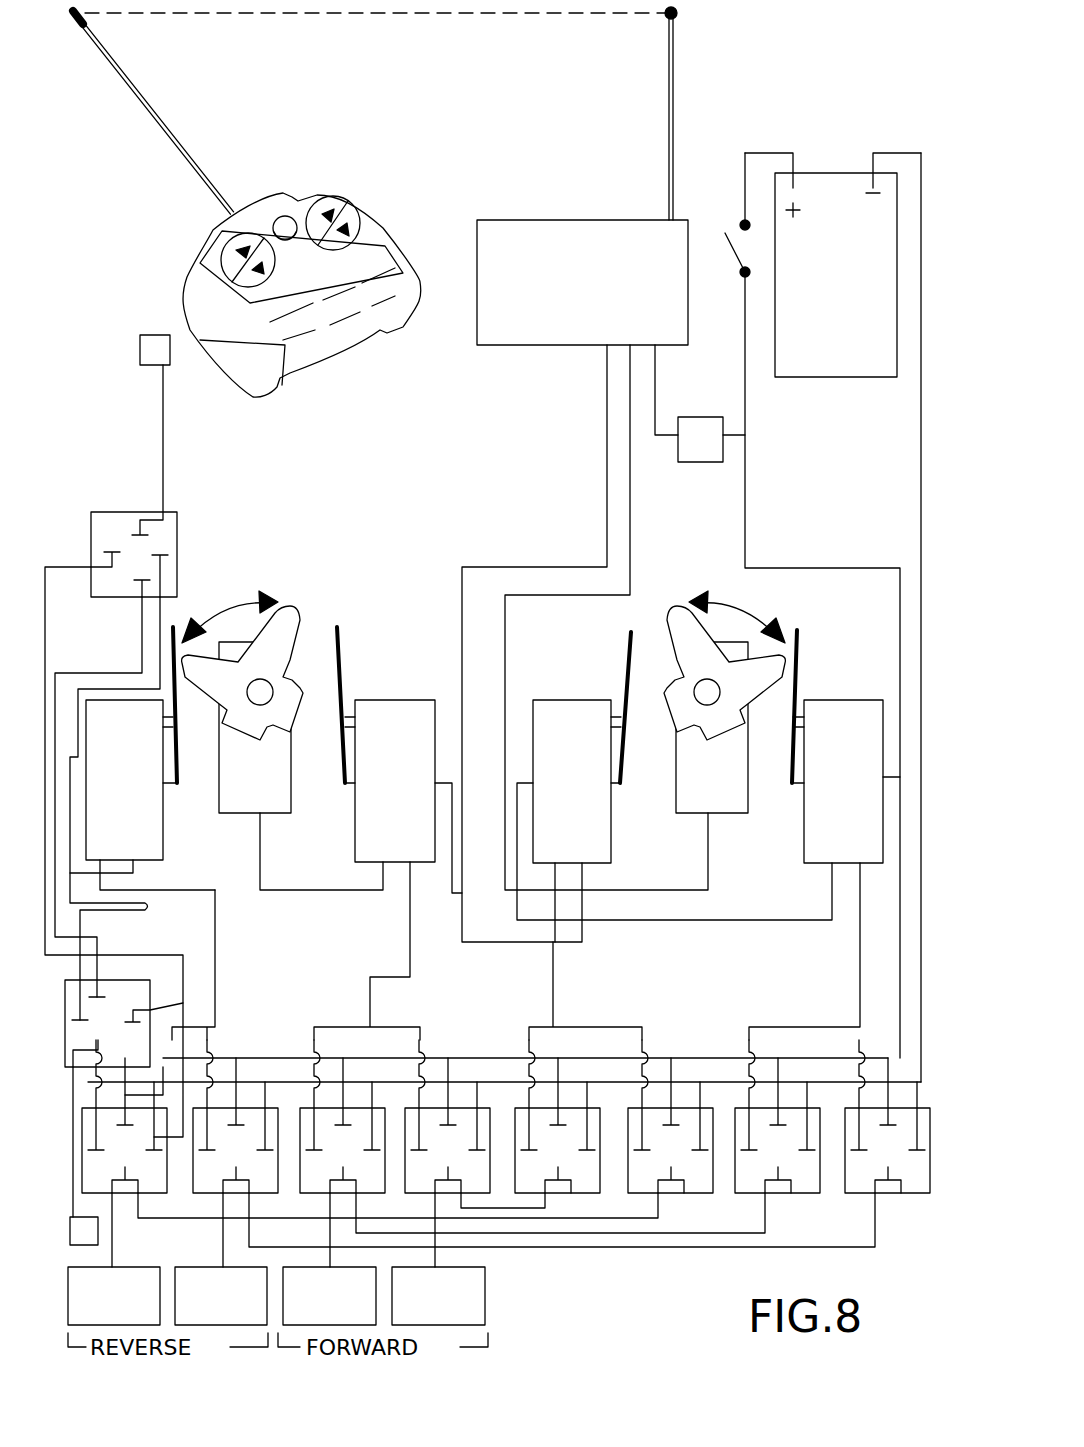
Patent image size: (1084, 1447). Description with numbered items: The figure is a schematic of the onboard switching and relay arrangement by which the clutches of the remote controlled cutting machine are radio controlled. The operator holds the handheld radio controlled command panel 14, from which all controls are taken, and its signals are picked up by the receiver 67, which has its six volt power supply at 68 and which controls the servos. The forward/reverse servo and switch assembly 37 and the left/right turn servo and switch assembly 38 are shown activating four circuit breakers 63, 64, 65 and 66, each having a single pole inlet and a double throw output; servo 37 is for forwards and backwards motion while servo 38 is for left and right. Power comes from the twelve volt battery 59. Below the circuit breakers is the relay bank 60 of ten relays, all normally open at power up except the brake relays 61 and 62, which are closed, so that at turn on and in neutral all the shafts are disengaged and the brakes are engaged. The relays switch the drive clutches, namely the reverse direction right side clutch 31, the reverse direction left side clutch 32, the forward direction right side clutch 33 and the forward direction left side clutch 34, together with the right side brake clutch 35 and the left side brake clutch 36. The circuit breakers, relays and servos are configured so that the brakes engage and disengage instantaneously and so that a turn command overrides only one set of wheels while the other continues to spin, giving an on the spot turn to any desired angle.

The handheld radio controlled command panel 14 is at (362, 195).
The reverse direction right side clutch 31 is at (114, 1296).
The reverse direction left side clutch 32 is at (221, 1296).
The forward direction right side clutch 33 is at (329, 1296).
The forward direction left side clutch 34 is at (438, 1296).
The right side brake clutch 35 is at (142, 322).
The left side brake clutch 36 is at (98, 1230).
The forward/reverse servo and switch assembly 37 is at (300, 600).
The left/right turn servo and switch assembly 38 is at (681, 598).
The 12V battery 59 is at (823, 265).
The relay bank 60 is at (623, 940).
The brake relay 61 is at (160, 543).
The brake relay 62 is at (130, 995).
The circuit breaker 63 is at (131, 780).
The circuit breaker 64 is at (390, 781).
The circuit breaker 65 is at (577, 781).
The circuit breaker 66 is at (837, 781).
The receiver 67 is at (582, 176).
The 6V power supply 68 is at (686, 452).